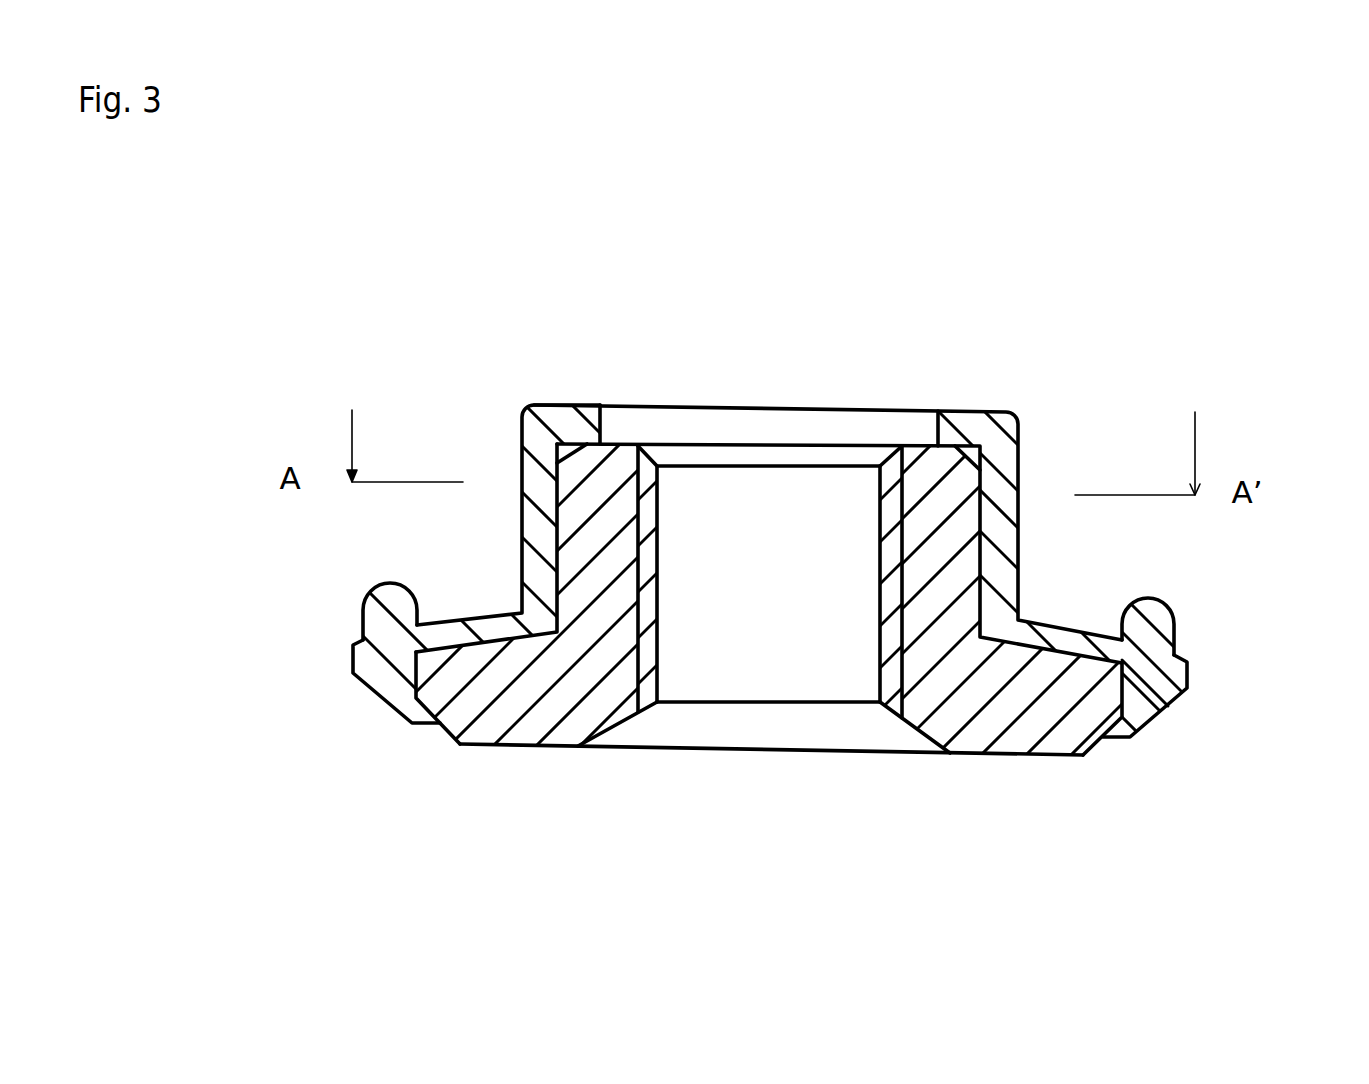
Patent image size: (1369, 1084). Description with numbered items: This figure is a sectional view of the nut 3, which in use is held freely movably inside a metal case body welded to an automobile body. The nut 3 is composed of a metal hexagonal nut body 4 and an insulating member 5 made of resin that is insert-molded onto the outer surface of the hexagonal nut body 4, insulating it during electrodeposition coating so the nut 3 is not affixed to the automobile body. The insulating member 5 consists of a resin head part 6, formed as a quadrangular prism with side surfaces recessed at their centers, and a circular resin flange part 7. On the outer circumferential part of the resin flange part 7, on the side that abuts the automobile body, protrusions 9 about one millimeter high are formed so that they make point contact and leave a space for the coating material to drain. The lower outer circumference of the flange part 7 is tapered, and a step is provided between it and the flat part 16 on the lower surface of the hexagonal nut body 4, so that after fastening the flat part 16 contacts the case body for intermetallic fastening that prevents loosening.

The nut 3 is at (738, 564).
The hexagonal nut body 4 is at (570, 725).
The insulating member 5 is at (999, 442).
The resin head part 6 is at (537, 438).
The resin flange part 7 is at (1155, 692).
The protrusion 9 is at (373, 623).
The flat part 16 is at (1010, 758).